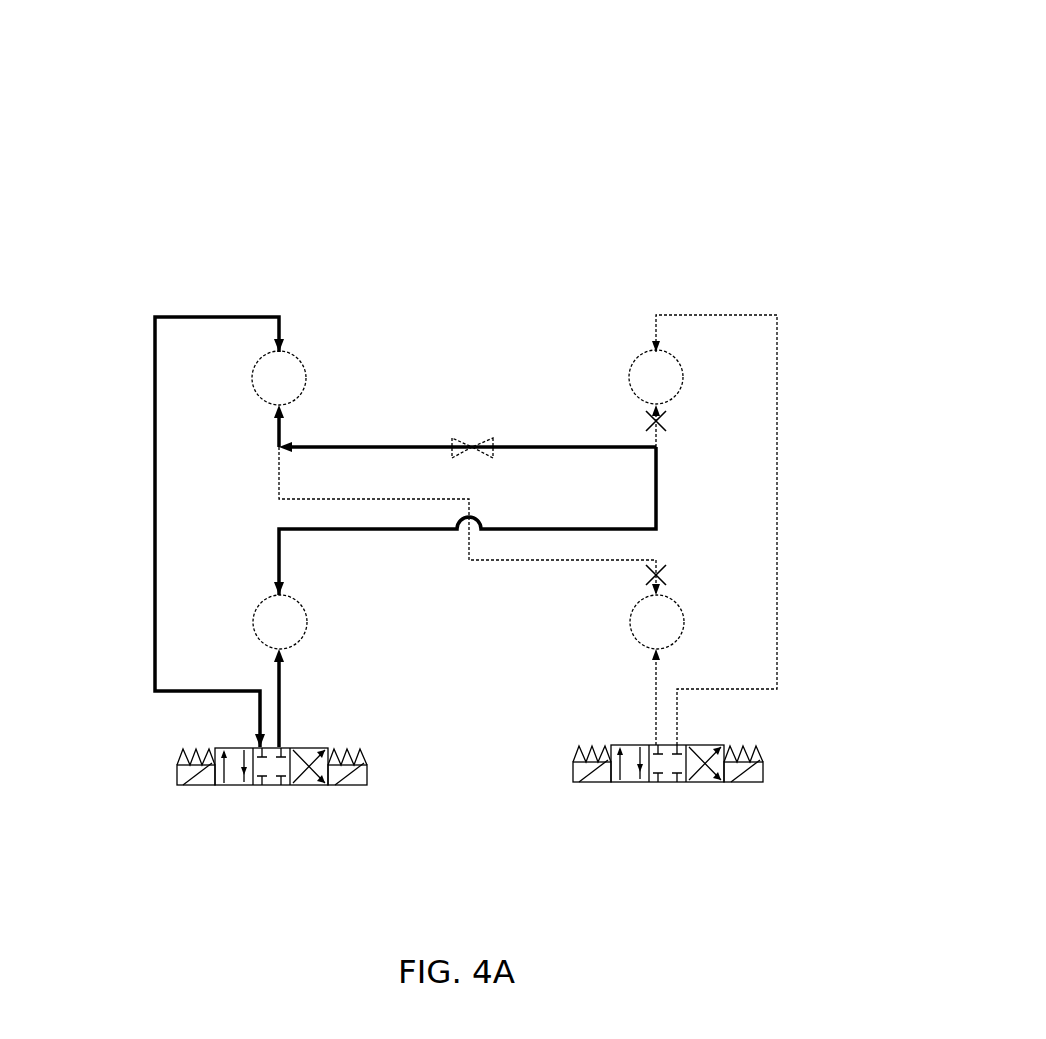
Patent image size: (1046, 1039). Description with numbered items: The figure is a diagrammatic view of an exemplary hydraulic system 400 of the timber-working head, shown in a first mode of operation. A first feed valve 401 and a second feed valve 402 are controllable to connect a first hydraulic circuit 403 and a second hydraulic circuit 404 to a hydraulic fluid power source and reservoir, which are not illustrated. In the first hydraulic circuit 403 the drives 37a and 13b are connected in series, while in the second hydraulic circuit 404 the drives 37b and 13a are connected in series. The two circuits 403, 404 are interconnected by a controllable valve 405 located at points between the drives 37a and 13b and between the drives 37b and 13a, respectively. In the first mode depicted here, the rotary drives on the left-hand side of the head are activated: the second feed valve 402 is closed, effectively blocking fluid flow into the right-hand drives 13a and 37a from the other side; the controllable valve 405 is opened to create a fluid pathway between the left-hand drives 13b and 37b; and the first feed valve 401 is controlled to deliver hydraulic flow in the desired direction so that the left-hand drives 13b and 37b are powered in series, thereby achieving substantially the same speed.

The hydraulic system 400 is at (116, 52).
The first feed valve 401 is at (217, 785).
The second feed valve 402 is at (677, 783).
The first hydraulic circuit 403 is at (155, 478).
The second hydraulic circuit 404 is at (730, 316).
The controllable valve 405 is at (470, 445).
The RH drive 13a is at (637, 352).
The LH drive 13b is at (256, 366).
The RH drive 37a is at (632, 630).
The LH drive 37b is at (297, 606).